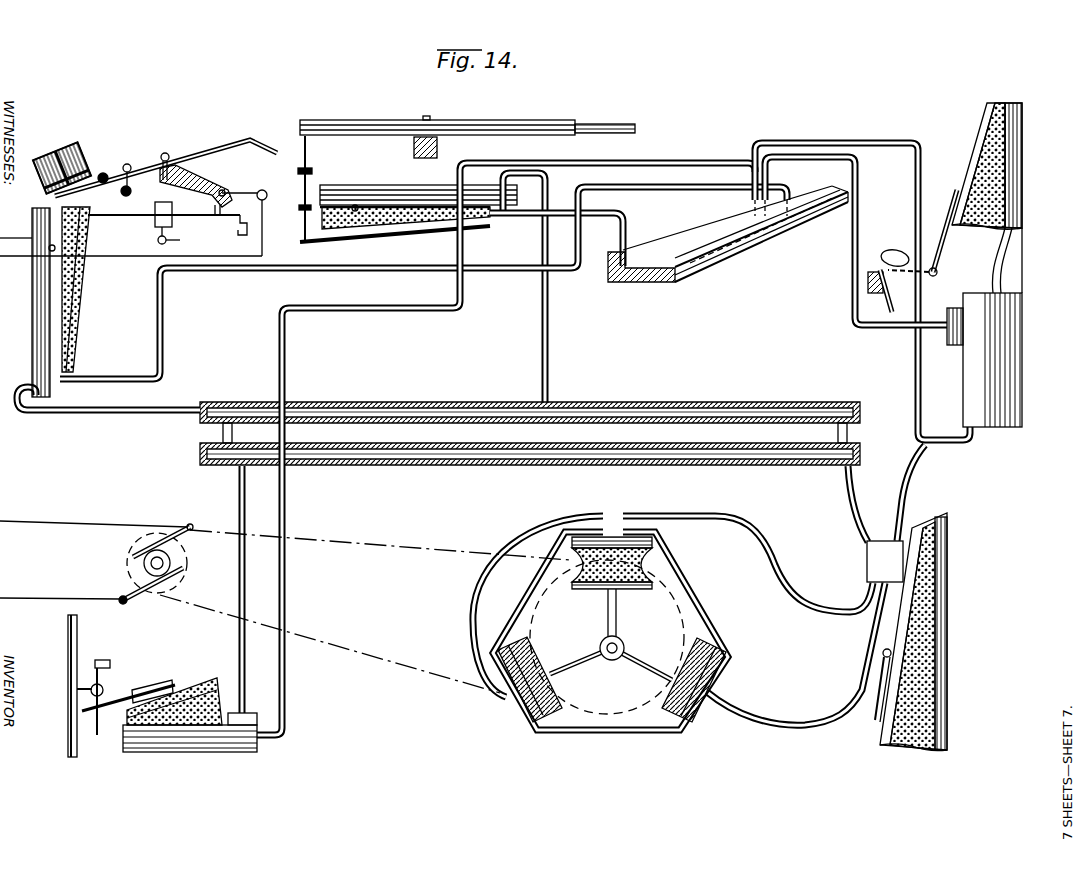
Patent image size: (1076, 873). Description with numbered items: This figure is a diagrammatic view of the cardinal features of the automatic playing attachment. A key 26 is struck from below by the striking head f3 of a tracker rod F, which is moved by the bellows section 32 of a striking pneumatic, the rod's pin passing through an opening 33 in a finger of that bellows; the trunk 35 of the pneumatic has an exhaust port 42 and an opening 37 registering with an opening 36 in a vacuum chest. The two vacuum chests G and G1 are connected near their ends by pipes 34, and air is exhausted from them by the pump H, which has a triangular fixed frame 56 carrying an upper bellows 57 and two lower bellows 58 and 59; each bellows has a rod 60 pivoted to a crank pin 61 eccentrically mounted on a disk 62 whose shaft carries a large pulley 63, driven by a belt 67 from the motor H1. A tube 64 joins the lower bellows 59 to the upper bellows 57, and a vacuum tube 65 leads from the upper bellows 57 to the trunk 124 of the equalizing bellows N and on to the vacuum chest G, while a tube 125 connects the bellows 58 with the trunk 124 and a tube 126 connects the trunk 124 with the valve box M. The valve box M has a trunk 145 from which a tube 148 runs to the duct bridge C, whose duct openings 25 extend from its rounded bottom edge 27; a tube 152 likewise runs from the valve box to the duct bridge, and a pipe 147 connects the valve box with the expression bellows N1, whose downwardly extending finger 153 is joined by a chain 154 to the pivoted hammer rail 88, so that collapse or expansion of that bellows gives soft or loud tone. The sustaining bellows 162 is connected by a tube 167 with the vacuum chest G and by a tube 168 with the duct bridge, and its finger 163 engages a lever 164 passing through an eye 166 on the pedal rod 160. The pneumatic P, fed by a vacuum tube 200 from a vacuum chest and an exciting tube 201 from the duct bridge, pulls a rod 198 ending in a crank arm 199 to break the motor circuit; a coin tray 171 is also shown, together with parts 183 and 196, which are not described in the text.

The key 26 is at (523, 112).
The striking head f3 is at (306, 143).
The trunk 35 is at (443, 187).
The exhaust port 42 is at (355, 204).
The opening 36 is at (406, 186).
The bellows section 32 is at (437, 228).
The opening 33 is at (333, 241).
The opening 37 is at (547, 188).
The duct bridge C is at (503, 218).
The exciting tube 201 is at (520, 275).
The vacuum chest G1 is at (530, 392).
The vacuum chest G is at (468, 475).
The tubes 34 is at (218, 436).
The tube 168 is at (411, 312).
The tube 152 is at (836, 130).
The tube 148 is at (846, 160).
The duct openings 25 is at (645, 272).
The bottom edge 27 is at (740, 262).
The vacuum tube 200 is at (107, 407).
The pneumatic P is at (78, 335).
The tray 171 is at (270, 150).
The lever 183 is at (172, 170).
The tracker rod F is at (303, 200).
The rod 198 is at (128, 216).
The crank arm 199 is at (238, 230).
The expression bellows N1 is at (1024, 125).
The pipe 147 is at (996, 266).
The valve box M is at (1020, 292).
The trunk 145 is at (950, 346).
The hammer rail 88 is at (872, 268).
The finger 153 is at (940, 240).
The chain 154 is at (920, 275).
The tube 126 is at (910, 478).
The vacuum tube 65 is at (868, 508).
The tube 125 is at (810, 720).
The trunk 124 is at (887, 561).
The equalizing bellows N is at (952, 650).
The tube 64 is at (514, 530).
The pump H is at (610, 631).
The fixed frame 56 is at (527, 600).
The large pulley 63 is at (690, 629).
The upper bellows 57 is at (613, 535).
The rod 60 is at (617, 612).
The disk 62 is at (598, 636).
The crank pin 61 is at (623, 651).
The bellows 59 is at (525, 704).
The bellows 58 is at (716, 670).
The tube 167 is at (239, 589).
The belt 67 is at (360, 531).
The motor H1 is at (130, 558).
The rod 196 is at (181, 524).
The pedal rod 160 is at (69, 668).
The eye 166 is at (97, 660).
The lever 164 is at (97, 736).
The finger 163 is at (121, 690).
The sustaining bellows 162 is at (199, 680).